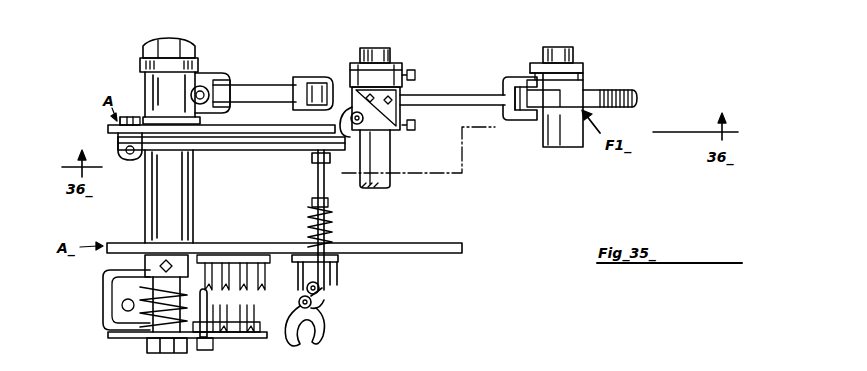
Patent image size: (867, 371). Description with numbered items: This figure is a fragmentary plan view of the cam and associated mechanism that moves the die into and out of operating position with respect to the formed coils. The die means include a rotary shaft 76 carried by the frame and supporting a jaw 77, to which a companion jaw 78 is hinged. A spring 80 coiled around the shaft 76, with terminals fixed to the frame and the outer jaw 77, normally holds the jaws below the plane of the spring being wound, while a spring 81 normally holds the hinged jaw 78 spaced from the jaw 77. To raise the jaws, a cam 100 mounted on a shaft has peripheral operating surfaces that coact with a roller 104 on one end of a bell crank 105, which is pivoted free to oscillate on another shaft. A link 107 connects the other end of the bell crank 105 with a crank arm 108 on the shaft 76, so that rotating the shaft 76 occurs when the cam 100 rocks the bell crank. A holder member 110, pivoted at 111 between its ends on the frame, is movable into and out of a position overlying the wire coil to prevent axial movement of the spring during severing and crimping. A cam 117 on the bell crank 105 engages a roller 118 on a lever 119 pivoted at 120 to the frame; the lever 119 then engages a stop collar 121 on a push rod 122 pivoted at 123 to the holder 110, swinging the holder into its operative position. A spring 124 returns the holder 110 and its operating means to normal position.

The rotary shaft 76 is at (167, 205).
The jaw 77 is at (112, 333).
The companion jaw 78 is at (220, 258).
The spring 80 is at (140, 340).
The spring 81 is at (112, 303).
The cam 100 is at (587, 77).
The roller 104 is at (530, 117).
The bell crank 105 is at (320, 91).
The link 107 is at (260, 96).
The crank arm 108 is at (222, 78).
The holder member 110 is at (308, 322).
The pivot 111 is at (330, 305).
The cam 117 is at (388, 105).
The roller 118 is at (380, 120).
The lever 119 is at (235, 150).
The pivot 120 is at (122, 147).
The stop collar 121 is at (312, 160).
The push rod 122 is at (316, 180).
The pivot 123 is at (332, 290).
The spring 124 is at (330, 236).